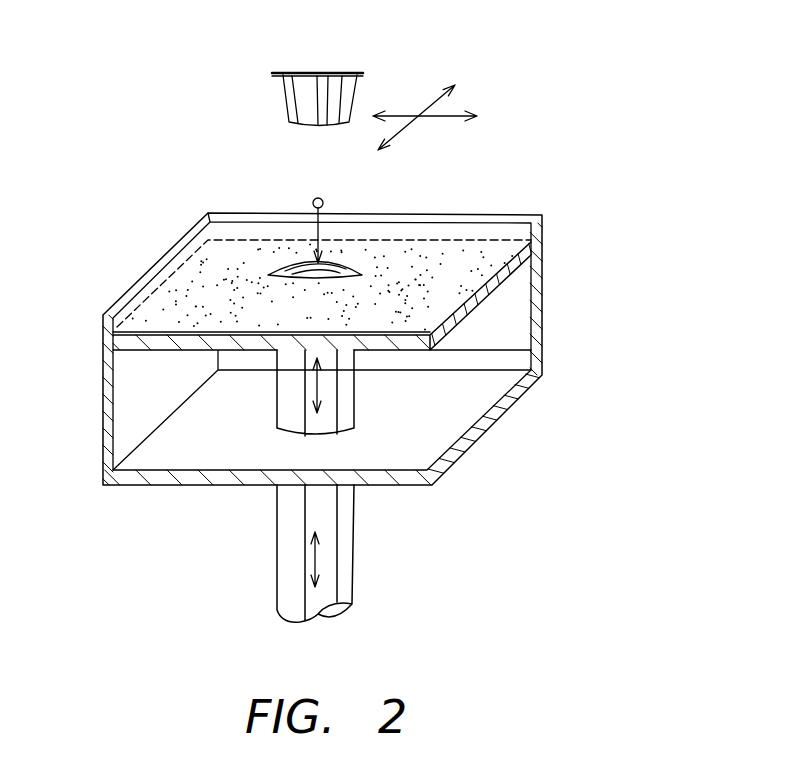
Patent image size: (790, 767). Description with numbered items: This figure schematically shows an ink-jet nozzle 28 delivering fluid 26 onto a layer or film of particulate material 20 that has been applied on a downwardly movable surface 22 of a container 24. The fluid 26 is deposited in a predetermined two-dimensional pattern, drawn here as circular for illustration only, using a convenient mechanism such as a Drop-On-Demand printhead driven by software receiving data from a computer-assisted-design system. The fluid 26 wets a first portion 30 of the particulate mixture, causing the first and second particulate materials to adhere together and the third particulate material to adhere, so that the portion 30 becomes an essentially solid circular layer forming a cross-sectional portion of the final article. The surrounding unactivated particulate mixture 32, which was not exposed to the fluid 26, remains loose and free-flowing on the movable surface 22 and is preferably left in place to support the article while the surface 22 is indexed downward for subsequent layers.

The layer of particulate material 20 is at (462, 246).
The downwardly movable surface 22 is at (447, 333).
The container 24 is at (542, 282).
The fluid 26 is at (314, 201).
The ink-jet nozzle 28 is at (283, 95).
The portion of the layer 30 is at (338, 265).
The unactivated particulate mixture 32 is at (183, 295).